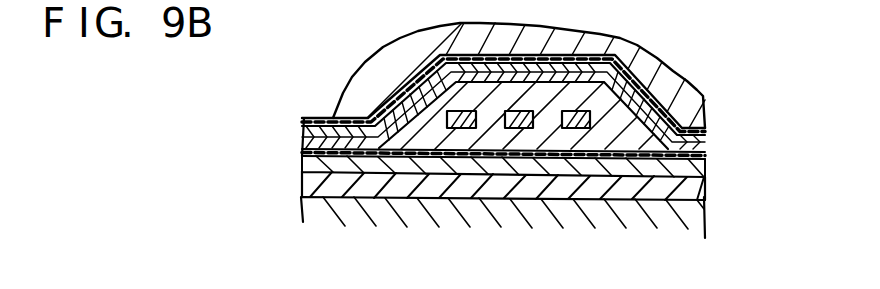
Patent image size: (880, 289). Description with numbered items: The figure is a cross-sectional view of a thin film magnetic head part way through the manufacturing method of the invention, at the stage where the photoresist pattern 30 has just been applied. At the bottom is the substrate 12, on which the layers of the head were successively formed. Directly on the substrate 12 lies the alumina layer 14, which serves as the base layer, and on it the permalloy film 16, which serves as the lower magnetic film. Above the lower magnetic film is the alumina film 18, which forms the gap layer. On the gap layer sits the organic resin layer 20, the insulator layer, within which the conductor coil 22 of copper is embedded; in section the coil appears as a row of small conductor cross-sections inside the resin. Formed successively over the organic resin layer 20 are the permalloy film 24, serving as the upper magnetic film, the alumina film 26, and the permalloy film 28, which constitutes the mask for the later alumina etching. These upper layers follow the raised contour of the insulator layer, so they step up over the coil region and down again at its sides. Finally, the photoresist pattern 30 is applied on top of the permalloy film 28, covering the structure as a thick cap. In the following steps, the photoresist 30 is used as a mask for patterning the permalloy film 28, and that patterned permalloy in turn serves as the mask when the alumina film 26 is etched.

The substrate 12 is at (519, 236).
The alumina layer 14 is at (707, 214).
The permalloy film 16 is at (708, 179).
The alumina film 18 is at (303, 154).
The organic resin layer 20 is at (599, 140).
The conductor coil 22 is at (462, 130).
The permalloy film 24 is at (708, 161).
The alumina film 26 is at (706, 145).
The permalloy film 28 is at (705, 131).
The photoresist pattern 30 is at (706, 101).